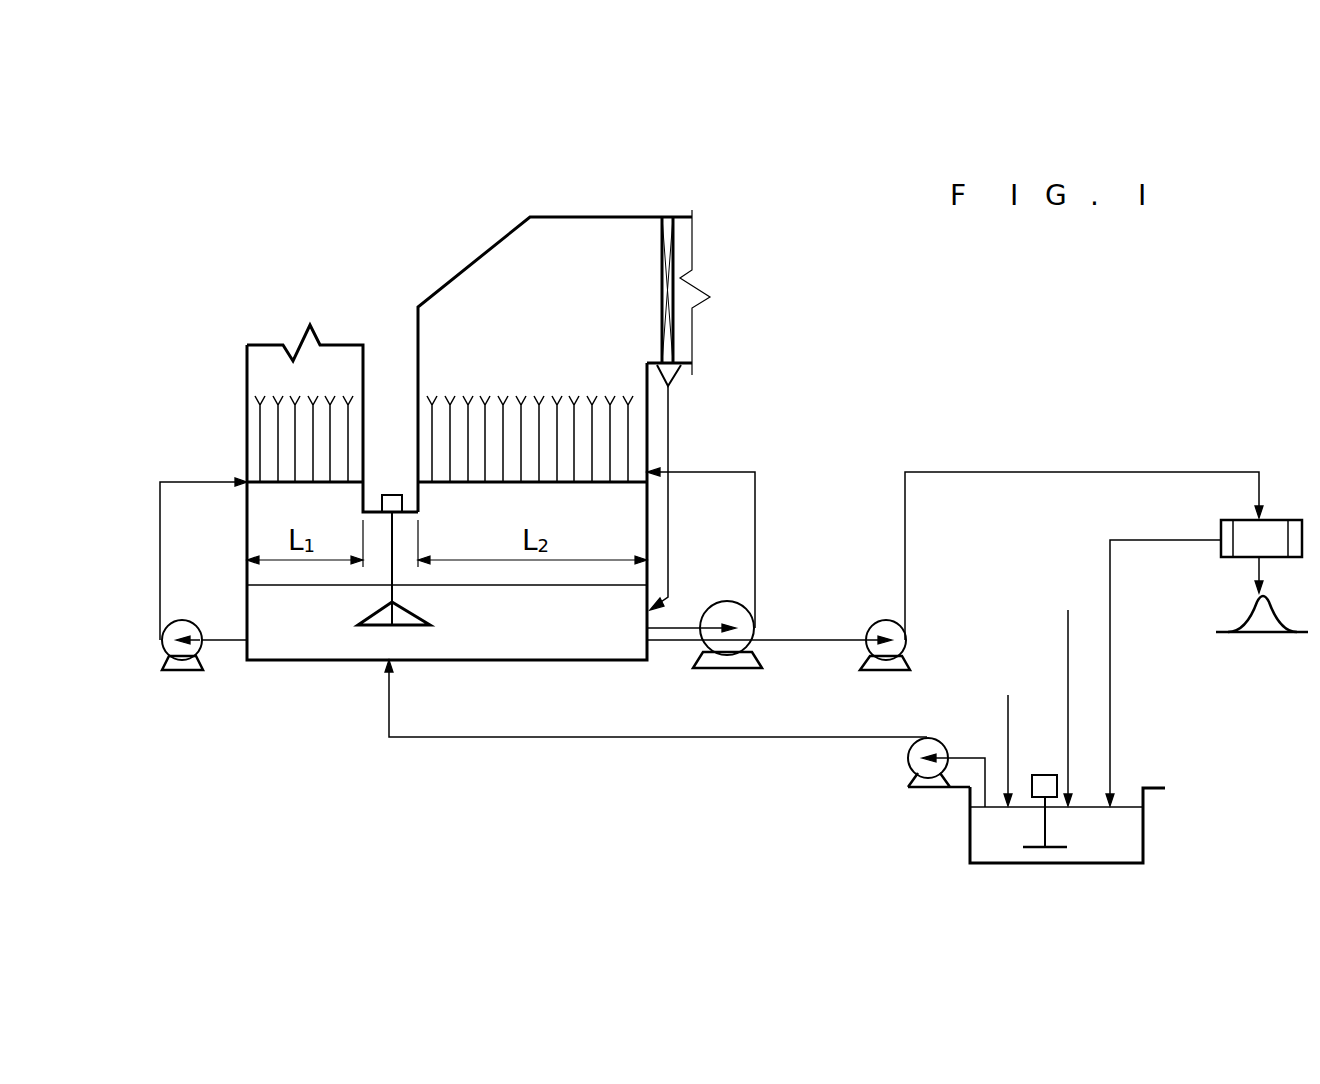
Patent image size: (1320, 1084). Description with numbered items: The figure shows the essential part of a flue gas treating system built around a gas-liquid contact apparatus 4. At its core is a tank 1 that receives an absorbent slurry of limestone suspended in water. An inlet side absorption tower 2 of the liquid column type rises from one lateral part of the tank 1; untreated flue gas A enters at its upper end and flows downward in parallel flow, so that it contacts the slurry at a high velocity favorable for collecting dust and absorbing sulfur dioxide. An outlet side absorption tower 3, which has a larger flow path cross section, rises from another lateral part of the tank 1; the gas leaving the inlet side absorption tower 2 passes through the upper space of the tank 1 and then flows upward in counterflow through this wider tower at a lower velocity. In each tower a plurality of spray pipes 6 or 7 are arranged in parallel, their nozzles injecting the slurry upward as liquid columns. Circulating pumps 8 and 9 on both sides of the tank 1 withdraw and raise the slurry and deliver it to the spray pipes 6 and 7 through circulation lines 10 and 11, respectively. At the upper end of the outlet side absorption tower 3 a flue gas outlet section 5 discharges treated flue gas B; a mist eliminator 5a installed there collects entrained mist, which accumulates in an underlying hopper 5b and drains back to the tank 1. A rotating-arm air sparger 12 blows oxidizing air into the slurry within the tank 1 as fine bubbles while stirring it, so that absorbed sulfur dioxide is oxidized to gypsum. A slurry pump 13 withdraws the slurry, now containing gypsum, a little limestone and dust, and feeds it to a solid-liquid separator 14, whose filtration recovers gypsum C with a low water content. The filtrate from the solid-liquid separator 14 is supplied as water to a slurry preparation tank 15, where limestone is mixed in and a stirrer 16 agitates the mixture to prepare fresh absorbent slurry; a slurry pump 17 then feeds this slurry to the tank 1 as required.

The tank 1 is at (303, 662).
The inlet side absorption tower 2 is at (247, 378).
The outlet side absorption tower 3 is at (650, 437).
The gas-liquid contact apparatus 4 is at (262, 318).
The flue gas outlet section 5 is at (612, 217).
The mist eliminator 5a is at (676, 232).
The hopper 5b is at (674, 376).
The spray pipes 6 is at (270, 483).
The spray pipes 7 is at (587, 480).
The circulating pump 8 is at (192, 622).
The circulating pump 9 is at (727, 600).
The circulation line 10 is at (190, 482).
The circulation line 11 is at (755, 498).
The rotating-arm air sparger 12 is at (430, 619).
The slurry pump 13 is at (878, 621).
The solid-liquid separator 14 is at (1221, 527).
The slurry preparation tank 15 is at (1143, 826).
The stirrer 16 is at (1033, 850).
The slurry pump 17 is at (908, 757).
The untreated flue gas A is at (302, 300).
The treated flue gas B is at (772, 288).
The gypsum C is at (1237, 615).